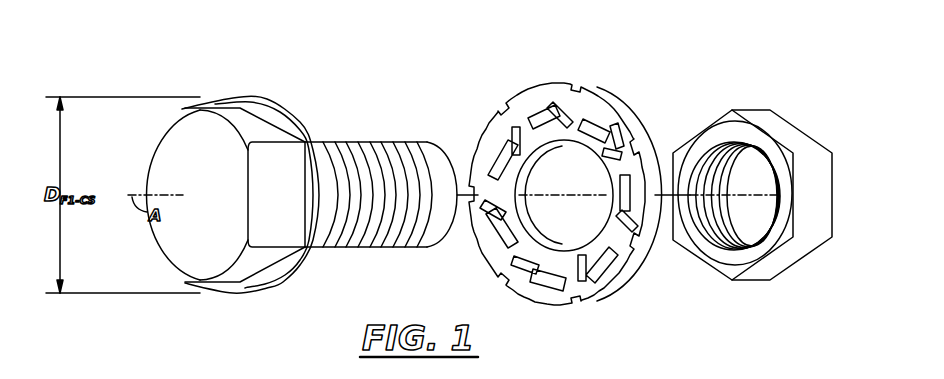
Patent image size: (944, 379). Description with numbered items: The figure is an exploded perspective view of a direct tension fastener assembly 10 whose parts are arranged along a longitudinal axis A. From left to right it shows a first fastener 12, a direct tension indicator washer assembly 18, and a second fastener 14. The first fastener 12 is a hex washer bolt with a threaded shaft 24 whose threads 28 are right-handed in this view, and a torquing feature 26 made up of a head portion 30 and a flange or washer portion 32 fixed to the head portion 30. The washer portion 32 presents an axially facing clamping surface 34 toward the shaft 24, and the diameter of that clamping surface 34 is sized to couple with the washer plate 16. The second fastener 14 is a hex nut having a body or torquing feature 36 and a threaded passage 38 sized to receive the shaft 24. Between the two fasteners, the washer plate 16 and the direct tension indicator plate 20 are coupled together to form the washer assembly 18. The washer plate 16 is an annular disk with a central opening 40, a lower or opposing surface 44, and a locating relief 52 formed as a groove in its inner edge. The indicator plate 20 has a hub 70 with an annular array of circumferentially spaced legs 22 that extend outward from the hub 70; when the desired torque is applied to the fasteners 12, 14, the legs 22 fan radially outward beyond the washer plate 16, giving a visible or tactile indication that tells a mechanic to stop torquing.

The fastener assembly 10 is at (452, 58).
The first fastener 12 is at (288, 190).
The second fastener 14 is at (752, 178).
The washer plate 16 is at (570, 191).
The direct tension indicator (DTI) washer assembly 18 is at (648, 102).
The direct tension indicator (DTI) plate 20 is at (514, 110).
The legs 22 is at (527, 293).
The threaded shaft 24 is at (343, 256).
The torquing feature 26 is at (213, 297).
The threads 28 is at (368, 141).
The head portion 30 is at (176, 255).
The flange or washer portion 32 is at (273, 283).
The clamping surface 34 is at (298, 115).
The body or torquing feature 36 is at (752, 275).
The passage 38 is at (718, 233).
The opening 40 is at (537, 222).
The second or lower or opposing surface 44 is at (543, 163).
The locating relief 52 is at (608, 181).
The hub 70 is at (583, 140).